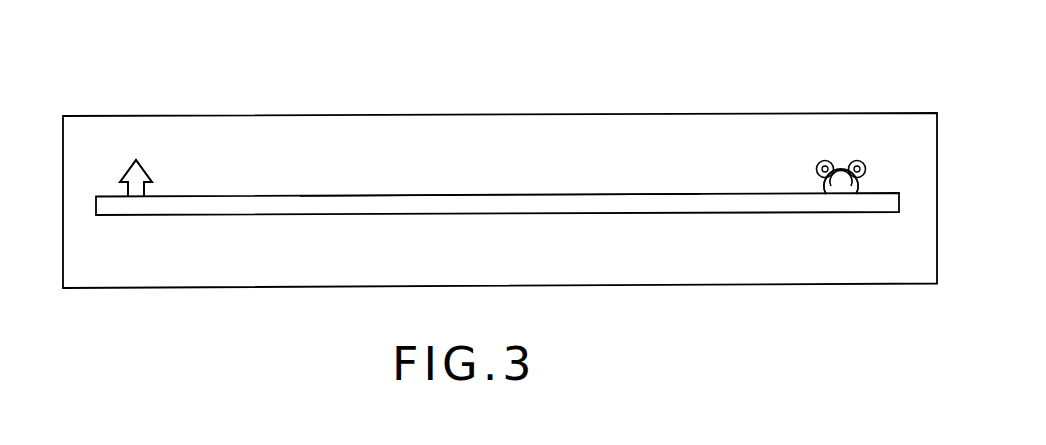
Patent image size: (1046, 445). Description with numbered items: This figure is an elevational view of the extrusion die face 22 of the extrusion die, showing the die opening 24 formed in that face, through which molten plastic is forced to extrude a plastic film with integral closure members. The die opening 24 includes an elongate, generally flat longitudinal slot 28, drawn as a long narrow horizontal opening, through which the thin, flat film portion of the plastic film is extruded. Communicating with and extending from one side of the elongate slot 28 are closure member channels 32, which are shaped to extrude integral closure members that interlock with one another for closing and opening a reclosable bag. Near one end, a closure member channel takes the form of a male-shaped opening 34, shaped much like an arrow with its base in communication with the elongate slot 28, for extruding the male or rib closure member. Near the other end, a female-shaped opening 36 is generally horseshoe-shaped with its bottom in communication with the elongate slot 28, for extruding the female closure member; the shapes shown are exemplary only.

The extrusion die face 22 is at (327, 140).
The die opening 24 is at (361, 218).
The elongate slot 28 is at (439, 205).
The closure member channels 32 is at (145, 150).
The male-shaped opening 34 is at (136, 190).
The female-shaped opening 36 is at (817, 180).